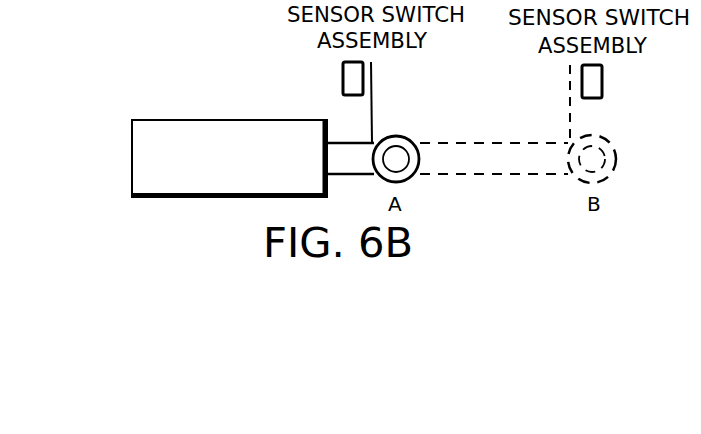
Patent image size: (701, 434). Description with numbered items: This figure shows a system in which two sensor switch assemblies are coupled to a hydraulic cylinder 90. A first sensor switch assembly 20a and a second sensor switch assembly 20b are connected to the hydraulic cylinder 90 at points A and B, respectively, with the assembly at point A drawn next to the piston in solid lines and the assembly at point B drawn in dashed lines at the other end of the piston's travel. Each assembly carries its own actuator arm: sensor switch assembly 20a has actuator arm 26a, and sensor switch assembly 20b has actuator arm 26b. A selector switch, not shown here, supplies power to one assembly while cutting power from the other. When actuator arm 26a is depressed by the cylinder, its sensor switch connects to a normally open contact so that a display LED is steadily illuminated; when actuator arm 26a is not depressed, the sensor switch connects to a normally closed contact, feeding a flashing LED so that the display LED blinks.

The hydraulic cylinder 90 is at (215, 118).
The sensor switch assembly 20a is at (343, 77).
The actuator arm 26a is at (372, 78).
The sensor switch assembly 20b is at (602, 80).
The actuator arm 26b is at (569, 78).